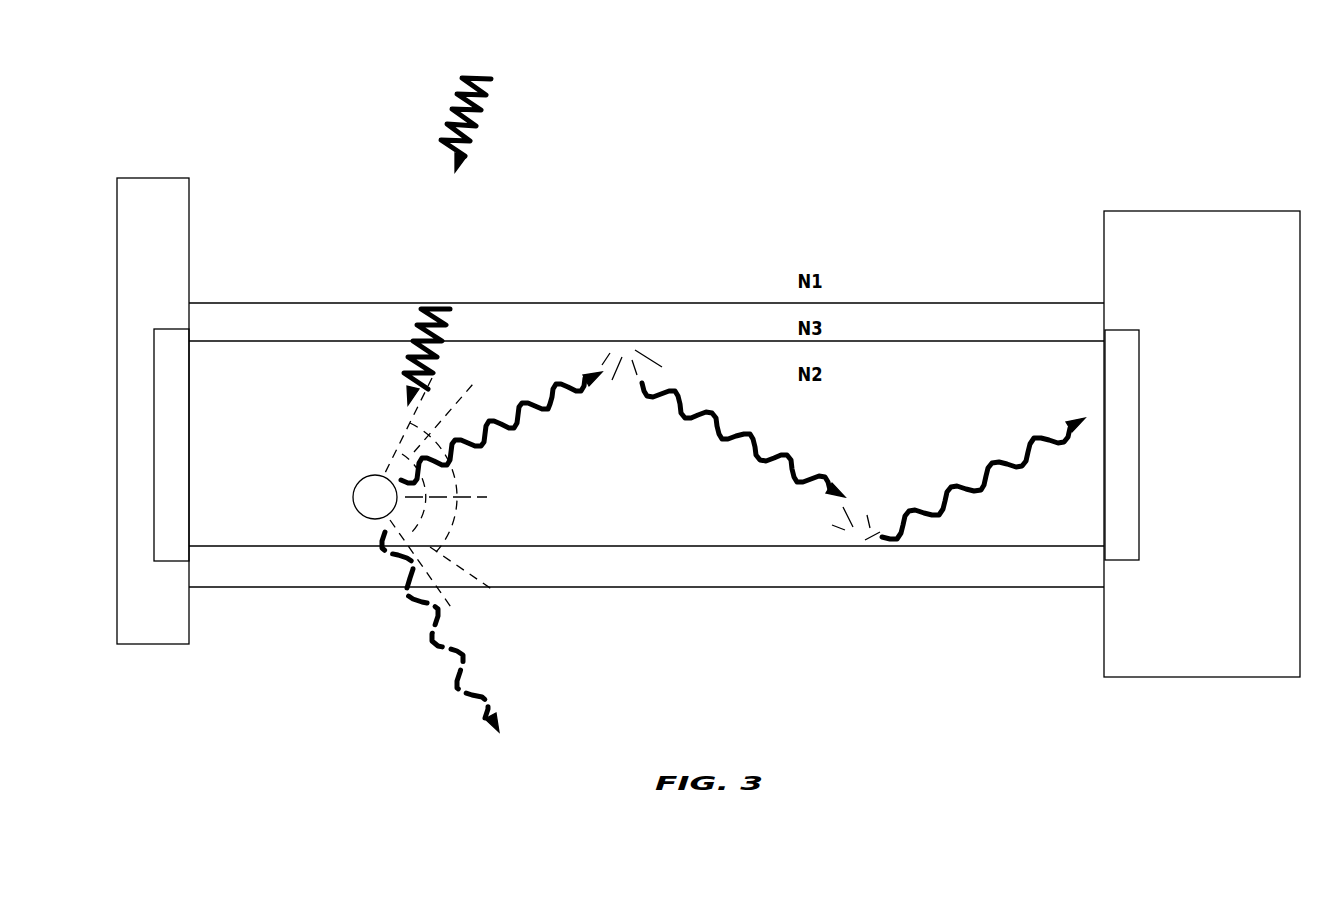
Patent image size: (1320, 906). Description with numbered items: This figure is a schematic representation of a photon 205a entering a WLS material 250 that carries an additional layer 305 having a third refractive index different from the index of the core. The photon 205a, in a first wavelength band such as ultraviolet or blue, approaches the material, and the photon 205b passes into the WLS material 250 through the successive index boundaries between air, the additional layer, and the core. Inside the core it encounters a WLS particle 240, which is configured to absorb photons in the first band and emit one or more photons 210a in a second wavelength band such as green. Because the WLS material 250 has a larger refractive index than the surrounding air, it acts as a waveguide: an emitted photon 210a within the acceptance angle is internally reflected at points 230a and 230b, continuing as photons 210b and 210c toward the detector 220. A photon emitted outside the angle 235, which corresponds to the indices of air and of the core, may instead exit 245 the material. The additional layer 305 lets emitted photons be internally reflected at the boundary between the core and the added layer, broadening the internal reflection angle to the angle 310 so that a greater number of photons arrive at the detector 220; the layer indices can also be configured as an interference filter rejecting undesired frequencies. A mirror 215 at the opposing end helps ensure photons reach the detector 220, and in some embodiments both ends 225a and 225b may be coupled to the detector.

The photon 205a is at (433, 115).
The photon 205b is at (402, 323).
The emitted photon 210a is at (530, 400).
The emitted photon 210b is at (698, 400).
The emitted photon 210c is at (980, 503).
The mirror 215 is at (171, 328).
The detector 220 is at (1105, 307).
The end 225a is at (1187, 213).
The end 225b is at (158, 180).
The internal reflection 230a is at (625, 357).
The internal reflection 230b is at (862, 530).
The angle 235 is at (425, 511).
The WLS particle 240 is at (376, 520).
The exit 245 is at (447, 630).
The WLS material 250 is at (967, 340).
The additional layer 305 is at (997, 302).
The angle 310 is at (457, 507).